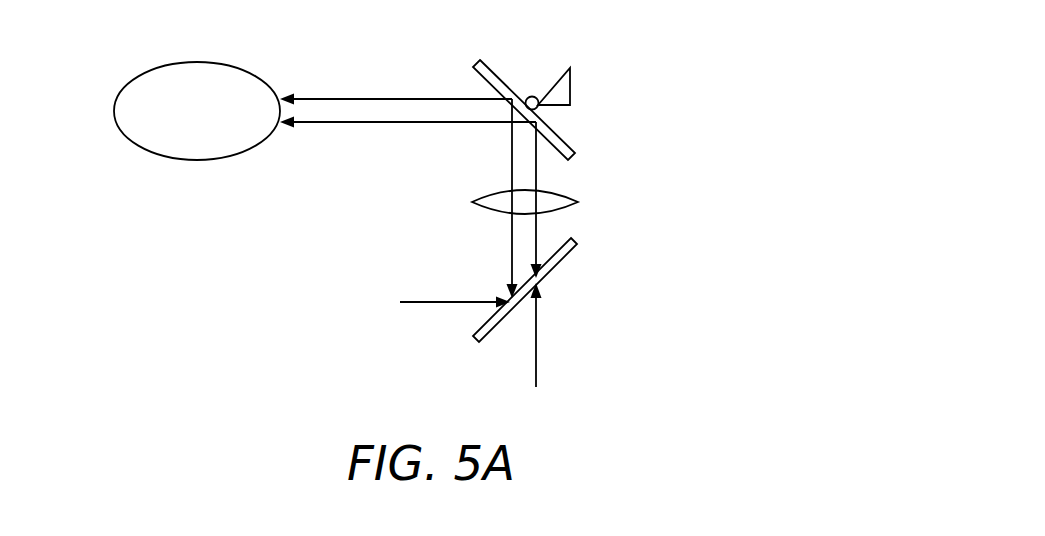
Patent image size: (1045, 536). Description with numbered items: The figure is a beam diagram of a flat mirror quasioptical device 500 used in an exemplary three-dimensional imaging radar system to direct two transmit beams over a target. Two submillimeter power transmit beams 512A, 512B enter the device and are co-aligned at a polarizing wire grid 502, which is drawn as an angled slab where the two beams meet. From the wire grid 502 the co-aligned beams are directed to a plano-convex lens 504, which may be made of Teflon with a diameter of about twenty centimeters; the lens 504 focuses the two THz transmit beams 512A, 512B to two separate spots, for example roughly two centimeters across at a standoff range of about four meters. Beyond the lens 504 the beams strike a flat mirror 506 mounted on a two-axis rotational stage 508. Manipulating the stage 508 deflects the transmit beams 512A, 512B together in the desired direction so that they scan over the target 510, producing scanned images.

The flat mirror quasioptical device 500 is at (633, 41).
The polarizing wire grid 502 is at (573, 238).
The plano-convex lens 504 is at (570, 193).
The flat mirror 506 is at (570, 147).
The two-axis rotational stage 508 is at (555, 90).
The target 510 is at (135, 74).
The transmit beam 512A is at (642, 290).
The transmit beam 512B is at (348, 295).